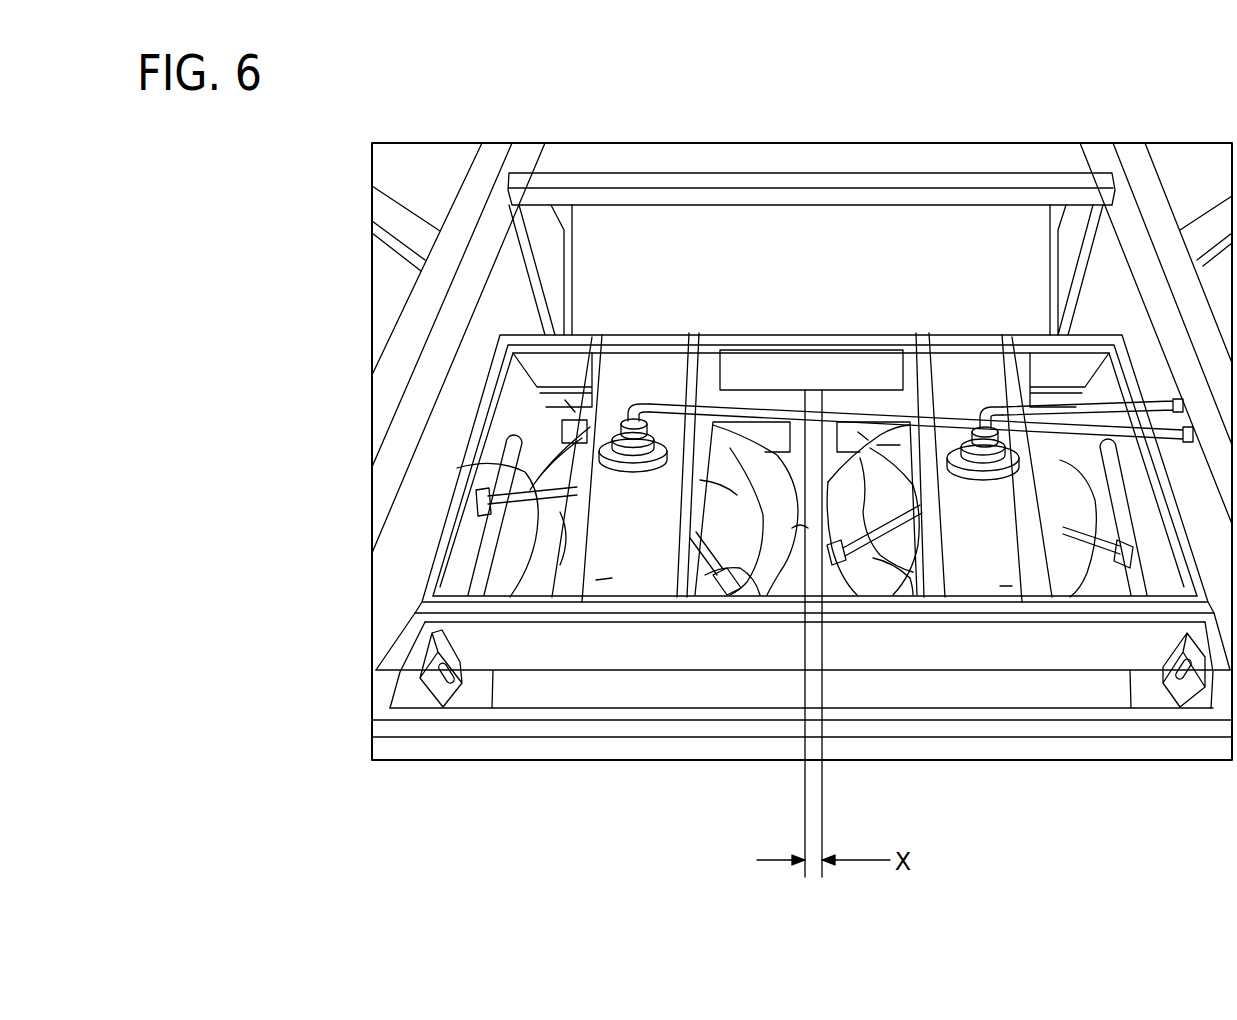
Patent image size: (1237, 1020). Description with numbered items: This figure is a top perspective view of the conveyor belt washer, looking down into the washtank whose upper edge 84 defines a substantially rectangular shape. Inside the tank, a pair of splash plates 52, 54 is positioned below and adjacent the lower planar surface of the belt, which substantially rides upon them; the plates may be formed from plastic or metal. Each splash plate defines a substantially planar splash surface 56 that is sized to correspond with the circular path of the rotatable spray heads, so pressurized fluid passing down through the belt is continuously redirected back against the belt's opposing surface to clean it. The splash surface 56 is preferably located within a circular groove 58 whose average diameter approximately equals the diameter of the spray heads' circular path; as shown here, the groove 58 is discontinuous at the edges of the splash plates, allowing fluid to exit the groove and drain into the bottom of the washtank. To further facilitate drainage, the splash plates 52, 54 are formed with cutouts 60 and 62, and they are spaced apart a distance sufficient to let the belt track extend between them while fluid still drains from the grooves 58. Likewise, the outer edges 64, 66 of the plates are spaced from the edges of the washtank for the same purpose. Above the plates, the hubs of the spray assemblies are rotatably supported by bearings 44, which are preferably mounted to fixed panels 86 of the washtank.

The bearings 44 is at (632, 470).
The splash plate 52 is at (565, 415).
The splash plate 54 is at (827, 432).
The splash surface 56 is at (765, 452).
The circular groove 58 is at (798, 528).
The cutout 60 is at (705, 600).
The cutout 62 is at (565, 400).
The edge 64 is at (457, 468).
The edge 66 is at (1097, 495).
The upper edge 84 is at (663, 607).
The fixed panels 86 is at (603, 580).